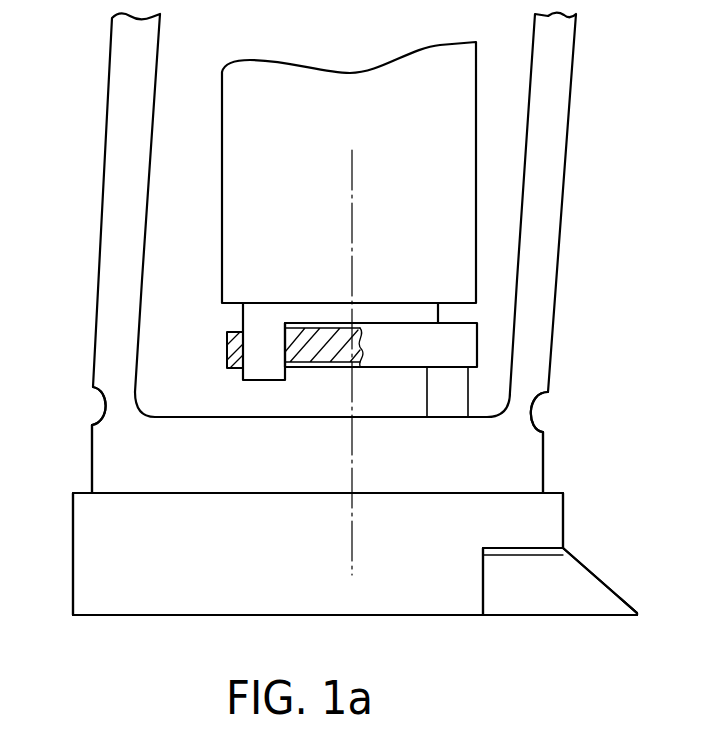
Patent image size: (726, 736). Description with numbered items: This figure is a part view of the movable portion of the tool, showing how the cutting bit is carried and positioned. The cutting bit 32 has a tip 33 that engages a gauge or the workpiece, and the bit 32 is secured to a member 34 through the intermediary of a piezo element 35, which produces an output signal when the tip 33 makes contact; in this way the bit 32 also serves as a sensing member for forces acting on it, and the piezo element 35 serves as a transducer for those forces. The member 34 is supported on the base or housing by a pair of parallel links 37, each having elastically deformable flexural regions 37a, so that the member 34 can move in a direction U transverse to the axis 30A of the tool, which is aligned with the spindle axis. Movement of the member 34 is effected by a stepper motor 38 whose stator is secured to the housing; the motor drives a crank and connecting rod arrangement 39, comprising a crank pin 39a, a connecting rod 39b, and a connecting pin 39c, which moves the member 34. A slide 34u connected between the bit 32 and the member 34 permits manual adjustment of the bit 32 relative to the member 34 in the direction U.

The axis 30A is at (352, 540).
The cutting bit 32 is at (548, 600).
The tip 33 is at (636, 610).
The member 34 is at (105, 462).
The slide 34u is at (102, 580).
The piezo element 35 is at (505, 556).
The parallel links 37 is at (543, 253).
The elastically deformable flexural regions 37a is at (100, 400).
The stepper motor 38 is at (238, 153).
The crank and connecting rod arrangement 39 is at (245, 318).
The crank pin 39a is at (250, 345).
The connecting rod 39b is at (468, 350).
The connecting pin 39c is at (458, 388).